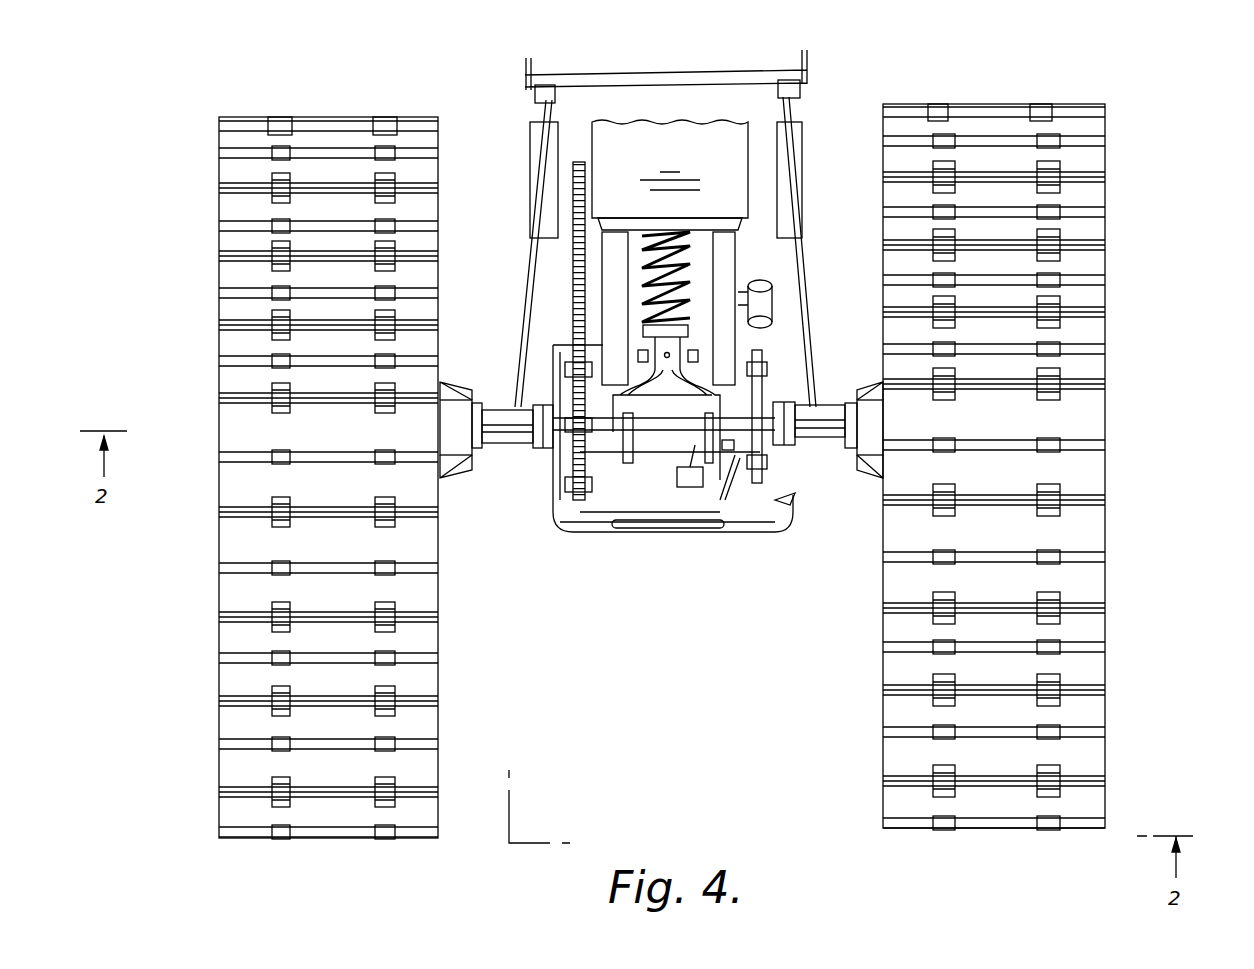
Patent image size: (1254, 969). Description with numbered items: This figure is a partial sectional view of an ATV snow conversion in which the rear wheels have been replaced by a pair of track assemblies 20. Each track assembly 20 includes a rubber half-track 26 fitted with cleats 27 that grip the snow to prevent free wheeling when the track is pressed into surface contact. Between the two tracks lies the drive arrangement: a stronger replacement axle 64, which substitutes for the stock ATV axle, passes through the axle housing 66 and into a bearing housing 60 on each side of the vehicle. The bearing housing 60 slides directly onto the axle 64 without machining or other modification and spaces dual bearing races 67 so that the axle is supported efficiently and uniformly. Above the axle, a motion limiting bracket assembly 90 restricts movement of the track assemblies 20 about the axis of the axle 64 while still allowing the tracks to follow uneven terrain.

The track assembly 20 is at (215, 672).
The rubber half-track 26 is at (219, 343).
The cleats 27 is at (338, 803).
The bearing housing 60 is at (457, 395).
The replacement axle 64 is at (500, 432).
The axle housing 66 is at (657, 455).
The dual bearing races 67 is at (574, 270).
The motion limiting bracket assembly 90 is at (695, 68).